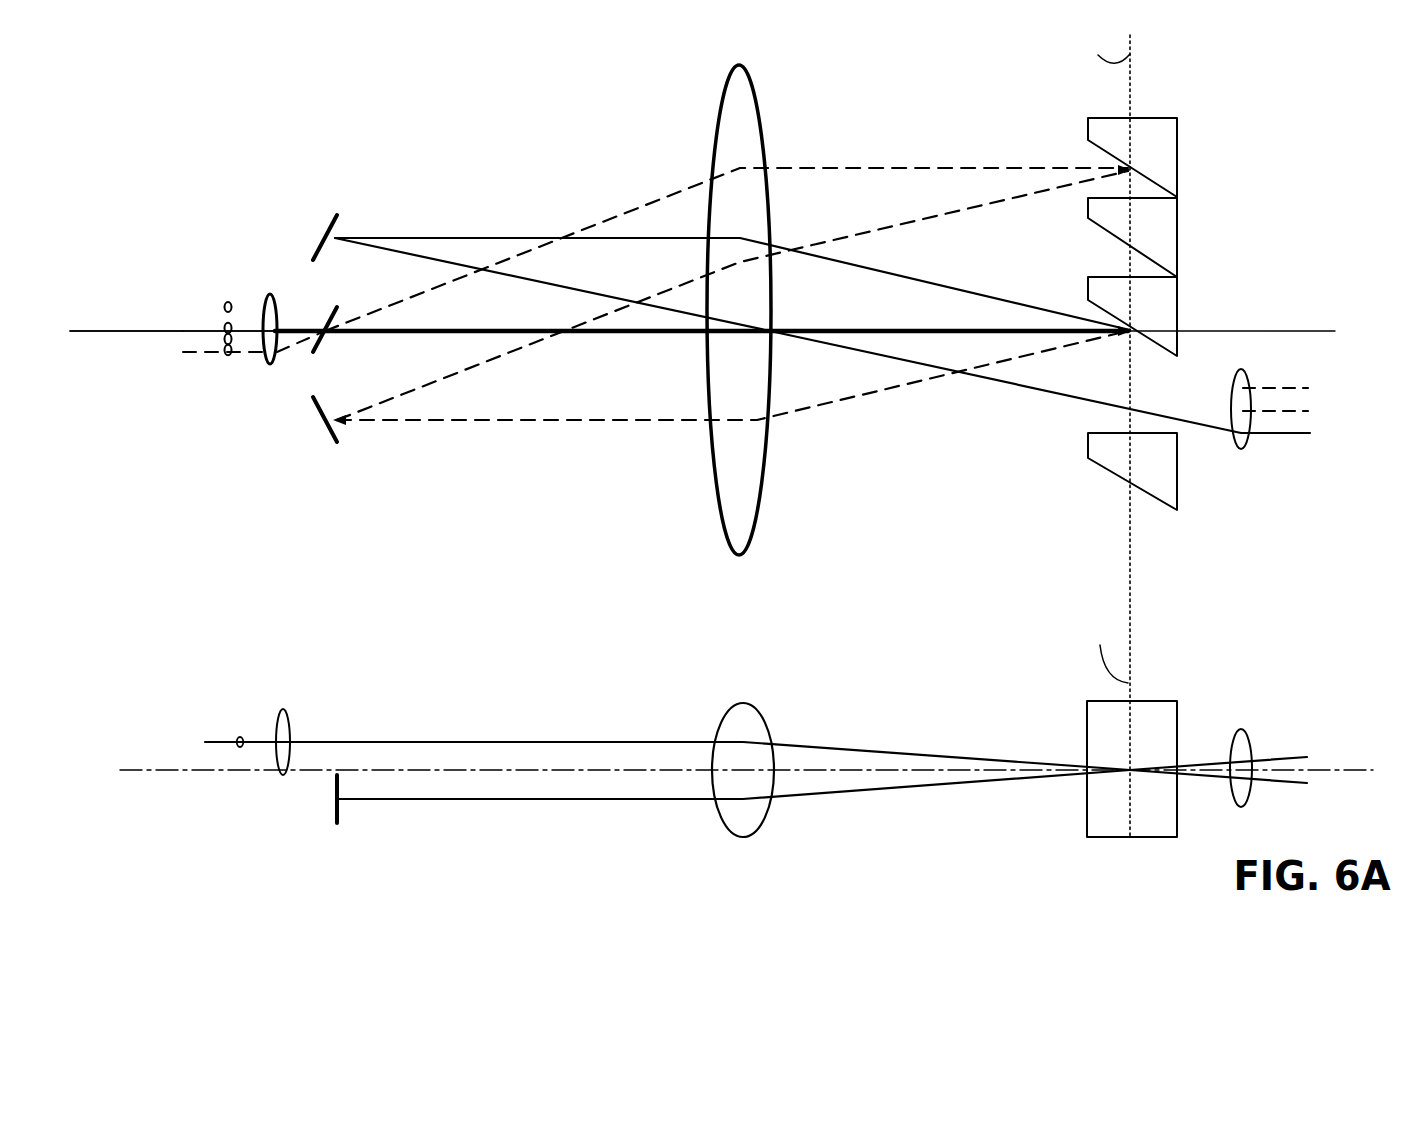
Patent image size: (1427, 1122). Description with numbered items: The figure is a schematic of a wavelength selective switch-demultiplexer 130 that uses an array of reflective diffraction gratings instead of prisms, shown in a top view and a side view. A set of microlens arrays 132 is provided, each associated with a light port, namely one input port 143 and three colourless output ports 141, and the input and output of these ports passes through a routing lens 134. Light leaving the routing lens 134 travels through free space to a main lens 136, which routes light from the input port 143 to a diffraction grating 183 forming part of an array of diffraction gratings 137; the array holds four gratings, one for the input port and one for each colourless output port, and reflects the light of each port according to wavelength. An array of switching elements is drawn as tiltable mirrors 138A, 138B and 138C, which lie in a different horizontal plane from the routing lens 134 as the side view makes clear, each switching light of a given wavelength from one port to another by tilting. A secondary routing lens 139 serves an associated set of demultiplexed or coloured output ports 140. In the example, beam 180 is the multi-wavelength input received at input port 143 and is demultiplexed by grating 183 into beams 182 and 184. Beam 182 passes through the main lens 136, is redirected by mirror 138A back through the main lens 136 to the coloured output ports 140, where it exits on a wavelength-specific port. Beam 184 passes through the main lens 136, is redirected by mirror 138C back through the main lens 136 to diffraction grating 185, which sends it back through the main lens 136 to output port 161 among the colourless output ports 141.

The wavelength selective switch-demultiplexer 130 is at (488, 125).
The microlens array 132 is at (240, 728).
The routing lens 134 is at (270, 373).
The main lens 136 is at (748, 693).
The array of diffraction gratings 137 is at (1200, 445).
The tiltable mirror 138A is at (327, 220).
The tiltable mirror 138B is at (327, 310).
The tiltable mirror 138C is at (323, 405).
The secondary routing lens 139 is at (1232, 458).
The coloured output ports 140 is at (1310, 380).
The colourless output ports 141 is at (177, 303).
The input port 143 is at (88, 334).
The output port 161 is at (205, 357).
The beam 180 is at (866, 326).
The beam 182 is at (975, 290).
The diffraction grating 183 is at (1177, 287).
The beam 184 is at (1062, 345).
The diffraction grating 185 is at (1177, 152).